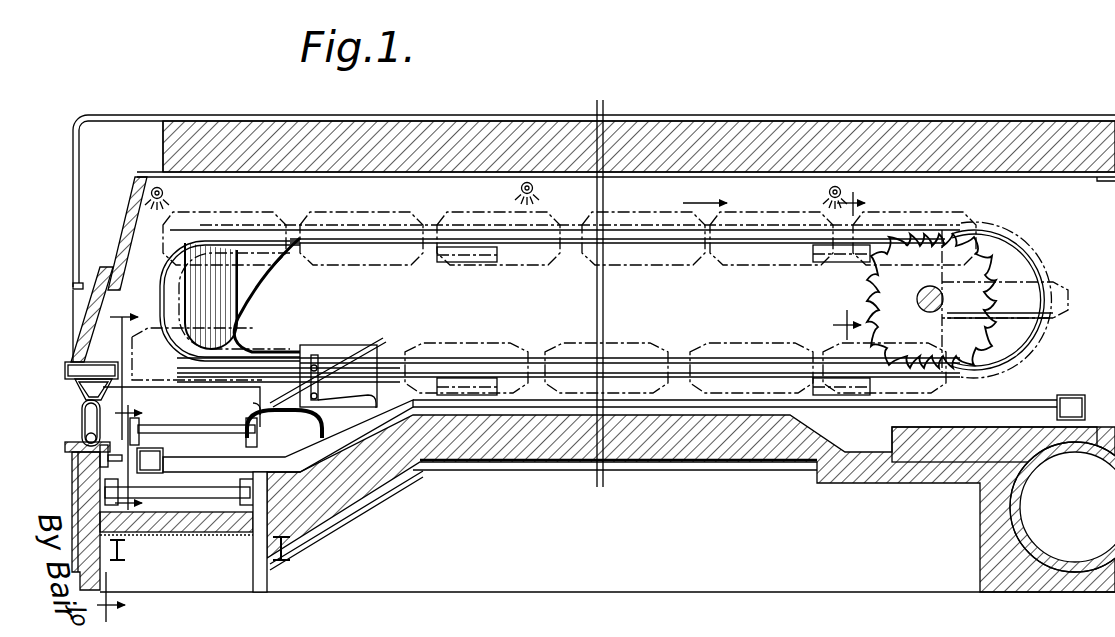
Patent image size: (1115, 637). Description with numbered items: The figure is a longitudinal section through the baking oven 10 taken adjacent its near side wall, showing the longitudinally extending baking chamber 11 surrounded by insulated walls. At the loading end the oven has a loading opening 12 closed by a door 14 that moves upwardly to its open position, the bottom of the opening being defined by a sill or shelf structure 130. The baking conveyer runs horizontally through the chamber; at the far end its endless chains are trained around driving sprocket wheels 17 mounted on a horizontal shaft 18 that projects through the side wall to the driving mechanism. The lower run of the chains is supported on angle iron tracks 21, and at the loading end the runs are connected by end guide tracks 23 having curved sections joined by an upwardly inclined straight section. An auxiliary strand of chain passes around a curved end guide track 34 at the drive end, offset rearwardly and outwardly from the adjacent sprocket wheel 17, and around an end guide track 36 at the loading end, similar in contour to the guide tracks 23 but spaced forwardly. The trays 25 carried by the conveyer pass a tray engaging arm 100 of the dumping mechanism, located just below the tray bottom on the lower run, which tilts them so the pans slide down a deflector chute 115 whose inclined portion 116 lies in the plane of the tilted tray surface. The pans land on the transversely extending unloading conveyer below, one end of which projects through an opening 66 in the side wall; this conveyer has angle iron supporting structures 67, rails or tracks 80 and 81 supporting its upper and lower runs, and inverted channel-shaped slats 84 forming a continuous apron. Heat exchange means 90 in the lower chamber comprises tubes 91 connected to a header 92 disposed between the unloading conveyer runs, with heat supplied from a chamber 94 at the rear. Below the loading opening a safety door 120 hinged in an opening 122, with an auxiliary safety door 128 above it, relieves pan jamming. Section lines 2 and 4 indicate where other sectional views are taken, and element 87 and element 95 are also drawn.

The baking oven 10 is at (722, 136).
The baking chamber 11 is at (975, 113).
The loading opening 12 is at (132, 298).
The door 14 is at (88, 324).
The driving sprocket wheels 17 is at (880, 280).
The horizontal shaft 18 is at (920, 308).
The angle iron tracks 21 is at (413, 372).
The end guide tracks 23 is at (180, 289).
The trays 25 is at (387, 253).
The curved end guide track 34 is at (1012, 256).
The end guide track 36 is at (243, 287).
The opening 66 is at (181, 403).
The angle iron supporting structures 67 is at (253, 556).
The angle iron rails or tracks 80 is at (114, 459).
The angle iron rails or tracks 81 is at (112, 500).
The inverted channel-shaped slats 84 is at (193, 422).
The lower plate 87 is at (179, 485).
The heat exchange means 90 is at (950, 405).
The tubes 91 is at (1000, 406).
The header 92 is at (275, 436).
The chamber 94 is at (1050, 458).
The block 95 is at (1080, 400).
The tray engaging arm 100 is at (330, 410).
The deflector chute 115 is at (284, 430).
The inclined portion 116 is at (240, 400).
The safety door 120 is at (84, 432).
The opening 122 is at (80, 415).
The auxiliary safety door 128 is at (74, 393).
The sill or shelf structure 130 is at (67, 362).
The section line 2- 2 is at (119, 454).
The section line 4- 4 is at (139, 457).